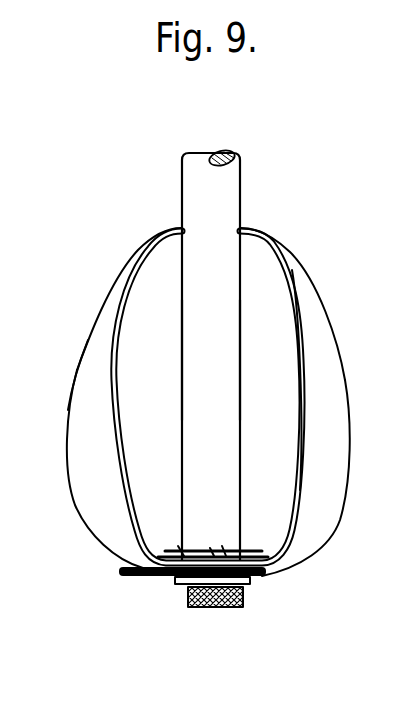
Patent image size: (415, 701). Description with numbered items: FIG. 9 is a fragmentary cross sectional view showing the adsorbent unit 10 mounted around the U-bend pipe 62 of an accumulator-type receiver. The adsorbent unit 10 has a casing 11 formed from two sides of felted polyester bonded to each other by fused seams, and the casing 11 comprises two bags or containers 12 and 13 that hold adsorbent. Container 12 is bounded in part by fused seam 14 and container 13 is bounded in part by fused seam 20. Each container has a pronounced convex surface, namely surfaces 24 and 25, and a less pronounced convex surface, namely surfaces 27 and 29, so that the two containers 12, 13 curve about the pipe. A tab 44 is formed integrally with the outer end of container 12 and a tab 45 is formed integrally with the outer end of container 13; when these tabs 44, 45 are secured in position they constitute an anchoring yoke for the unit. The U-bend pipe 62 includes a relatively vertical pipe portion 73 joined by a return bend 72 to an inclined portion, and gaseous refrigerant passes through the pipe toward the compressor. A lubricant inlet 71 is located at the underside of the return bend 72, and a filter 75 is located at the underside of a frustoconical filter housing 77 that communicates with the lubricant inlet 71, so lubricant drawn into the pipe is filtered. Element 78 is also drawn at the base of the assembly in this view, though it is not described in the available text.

The adsorbent unit 10 is at (107, 268).
The casing 11 is at (95, 303).
The container 12 is at (325, 345).
The container 13 is at (90, 352).
The fused seam 14 is at (305, 408).
The fused seam 20 is at (113, 401).
The pronounced convex surface 24 is at (262, 386).
The pronounced convex surface 25 is at (166, 356).
The less pronounced convex surface 27 is at (350, 455).
The less pronounced convex surface 29 is at (82, 462).
The tab 44 is at (146, 579).
The tab 45 is at (258, 535).
The U-bend pipe 62 is at (181, 176).
The lubricant inlet 71 is at (220, 546).
The return bend 72 is at (212, 547).
The vertical pipe portion 73 is at (229, 184).
The filter 75 is at (207, 608).
The filter housing 77 is at (181, 546).
The insulating plate 78 is at (250, 586).